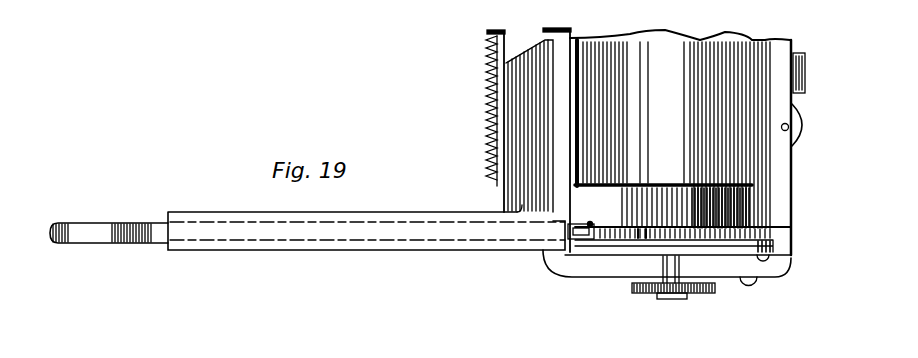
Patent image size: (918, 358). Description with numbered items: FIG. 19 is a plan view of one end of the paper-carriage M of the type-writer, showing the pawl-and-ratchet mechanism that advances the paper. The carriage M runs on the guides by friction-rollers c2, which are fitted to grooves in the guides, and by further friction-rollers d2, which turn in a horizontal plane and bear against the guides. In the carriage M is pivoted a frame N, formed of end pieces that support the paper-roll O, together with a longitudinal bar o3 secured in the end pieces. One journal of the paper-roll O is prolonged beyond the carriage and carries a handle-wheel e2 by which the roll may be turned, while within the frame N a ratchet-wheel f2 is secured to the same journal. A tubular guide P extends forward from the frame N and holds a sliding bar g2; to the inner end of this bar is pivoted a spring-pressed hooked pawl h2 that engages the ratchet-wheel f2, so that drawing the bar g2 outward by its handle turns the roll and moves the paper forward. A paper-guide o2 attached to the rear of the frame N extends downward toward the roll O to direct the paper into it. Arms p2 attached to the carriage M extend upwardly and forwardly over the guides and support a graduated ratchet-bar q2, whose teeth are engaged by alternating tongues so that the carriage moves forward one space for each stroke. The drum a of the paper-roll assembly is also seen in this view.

The sliding bar g2 is at (157, 226).
The tubular guide P is at (366, 226).
The ratchet-bar q2 is at (490, 110).
The arms p2 is at (529, 140).
The drum a is at (680, 142).
The paper-roll o is at (654, 207).
The paper-guide o2 is at (752, 210).
The spring-pressed hooked pawl h2 is at (611, 225).
The frame N is at (774, 248).
The longitudinal bar o3 is at (766, 256).
The paper-carriage M is at (561, 268).
The ratchet-wheel f2 is at (643, 232).
The handle-wheel e2 is at (692, 292).
The friction-rollers c2 is at (805, 82).
The friction-rollers d2 is at (801, 150).